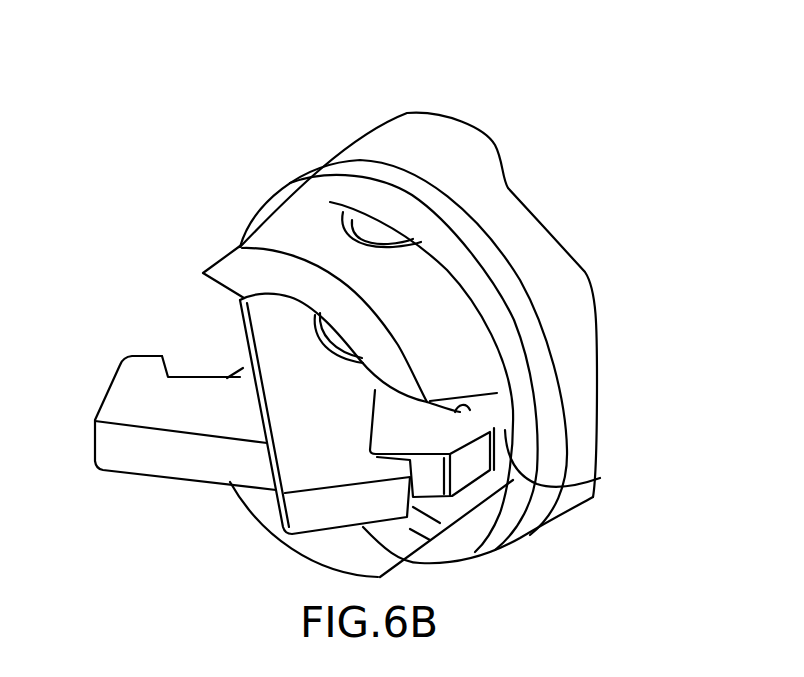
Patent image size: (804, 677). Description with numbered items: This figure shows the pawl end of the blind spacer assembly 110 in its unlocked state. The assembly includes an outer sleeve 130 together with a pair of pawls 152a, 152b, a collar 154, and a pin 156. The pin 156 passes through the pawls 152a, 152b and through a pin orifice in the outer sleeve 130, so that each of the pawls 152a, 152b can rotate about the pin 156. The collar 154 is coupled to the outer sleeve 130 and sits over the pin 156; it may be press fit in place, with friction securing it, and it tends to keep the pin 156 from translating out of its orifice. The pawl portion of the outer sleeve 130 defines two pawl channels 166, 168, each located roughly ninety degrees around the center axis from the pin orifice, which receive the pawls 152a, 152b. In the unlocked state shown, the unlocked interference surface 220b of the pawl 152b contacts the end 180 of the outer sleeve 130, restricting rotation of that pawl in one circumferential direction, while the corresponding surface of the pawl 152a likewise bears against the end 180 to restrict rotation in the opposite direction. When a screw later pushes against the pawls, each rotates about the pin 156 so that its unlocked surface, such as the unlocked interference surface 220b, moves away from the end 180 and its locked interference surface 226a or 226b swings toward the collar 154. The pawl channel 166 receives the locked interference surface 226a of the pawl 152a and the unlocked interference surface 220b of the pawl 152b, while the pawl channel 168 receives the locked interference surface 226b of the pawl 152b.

The blind spacer assembly 110 is at (133, 150).
The outer sleeve 130 is at (480, 160).
The pawl 152a is at (343, 409).
The pawl 152b is at (210, 416).
The collar 154 is at (313, 172).
The pin 156 is at (377, 227).
The pawl channel 166 is at (495, 397).
The pawl channel 168 is at (203, 318).
The end 180 is at (600, 478).
The unlocked interference surface 220b is at (460, 427).
The locked interference surface 226a is at (380, 423).
The locked interference surface 226b is at (190, 377).